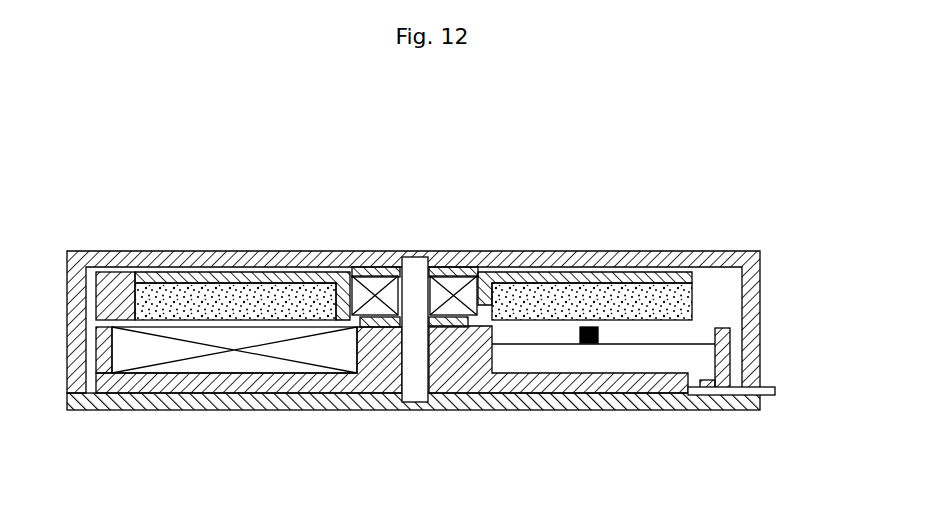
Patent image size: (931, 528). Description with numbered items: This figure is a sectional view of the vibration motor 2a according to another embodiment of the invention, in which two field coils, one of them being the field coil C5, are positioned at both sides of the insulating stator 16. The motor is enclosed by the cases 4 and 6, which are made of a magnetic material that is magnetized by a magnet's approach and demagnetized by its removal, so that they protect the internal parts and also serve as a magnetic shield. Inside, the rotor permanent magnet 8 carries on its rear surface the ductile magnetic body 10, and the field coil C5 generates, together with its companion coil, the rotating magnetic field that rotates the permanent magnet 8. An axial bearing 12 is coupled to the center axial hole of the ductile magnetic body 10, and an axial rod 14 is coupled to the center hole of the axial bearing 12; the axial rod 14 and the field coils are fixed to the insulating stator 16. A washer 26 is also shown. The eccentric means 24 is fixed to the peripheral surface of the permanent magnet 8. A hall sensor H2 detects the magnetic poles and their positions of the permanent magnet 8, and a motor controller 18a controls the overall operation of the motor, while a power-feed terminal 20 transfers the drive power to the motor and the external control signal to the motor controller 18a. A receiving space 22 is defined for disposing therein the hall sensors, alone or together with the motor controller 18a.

The vibration motor 2a is at (706, 233).
The case 4 is at (293, 252).
The case 6 is at (358, 402).
The rotor permanent magnet 8 is at (212, 295).
The ductile magnetic body 10 is at (501, 283).
The axial bearing 12 is at (376, 286).
The axial rod 14 is at (413, 378).
The insulating stator 16 is at (470, 380).
The motor controller 18a is at (578, 362).
The power-feed terminal 20 is at (771, 387).
The receiving space 22 is at (657, 338).
The eccentric means 24 is at (115, 283).
The washer 26 is at (456, 322).
The field coil C5 is at (187, 400).
The hall sensor H2 is at (590, 326).